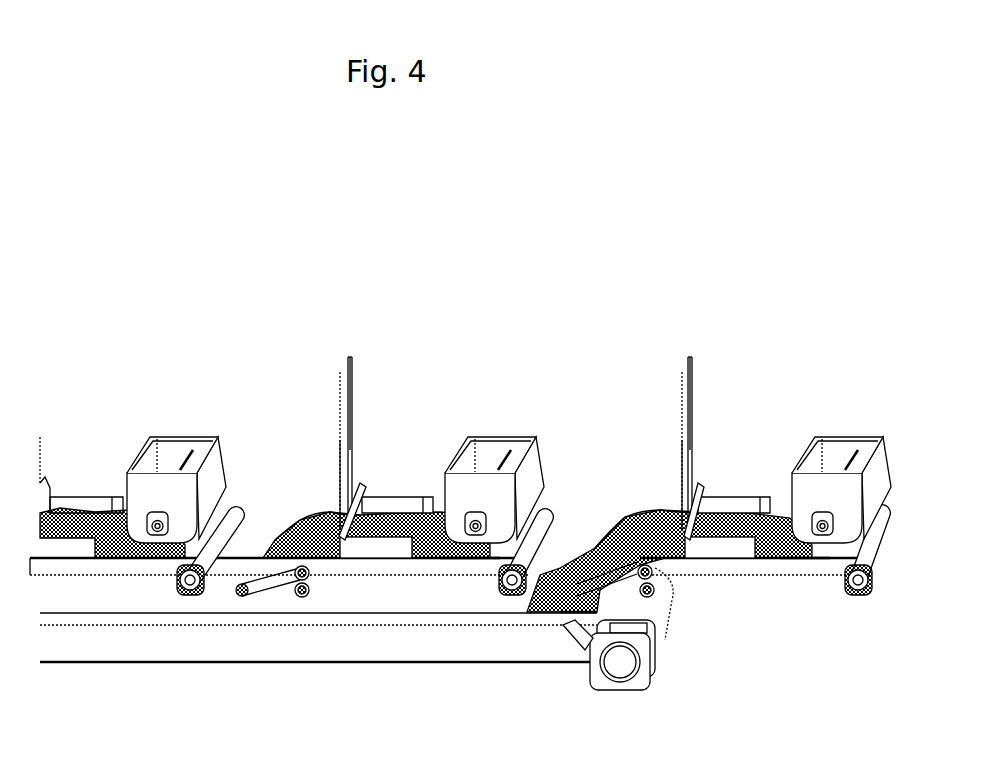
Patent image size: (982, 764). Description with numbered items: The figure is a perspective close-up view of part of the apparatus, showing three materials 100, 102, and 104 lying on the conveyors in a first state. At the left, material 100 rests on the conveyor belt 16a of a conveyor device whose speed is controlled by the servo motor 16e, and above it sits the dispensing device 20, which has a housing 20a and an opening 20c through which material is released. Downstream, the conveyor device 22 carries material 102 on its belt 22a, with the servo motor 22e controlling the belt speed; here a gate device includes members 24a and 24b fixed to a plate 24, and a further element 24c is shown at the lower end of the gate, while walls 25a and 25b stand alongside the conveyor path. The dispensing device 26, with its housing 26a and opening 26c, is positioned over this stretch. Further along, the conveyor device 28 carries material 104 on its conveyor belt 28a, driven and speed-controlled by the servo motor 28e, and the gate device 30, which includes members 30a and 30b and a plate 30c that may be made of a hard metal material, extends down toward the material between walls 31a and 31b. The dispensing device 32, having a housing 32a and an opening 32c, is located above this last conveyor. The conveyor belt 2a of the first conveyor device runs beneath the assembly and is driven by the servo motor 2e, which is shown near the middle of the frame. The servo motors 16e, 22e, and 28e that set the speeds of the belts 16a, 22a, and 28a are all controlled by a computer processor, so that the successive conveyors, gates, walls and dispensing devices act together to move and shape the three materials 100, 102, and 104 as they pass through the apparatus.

The conveyor belt 2a is at (275, 605).
The servo motor 2e is at (610, 672).
The conveyor belt 16a is at (210, 527).
The servo motor 16e is at (188, 585).
The dispensing device 20 is at (185, 450).
The housing 20a is at (215, 455).
The opening 20c is at (200, 443).
The conveyor device 22 is at (302, 520).
The belt 22a is at (322, 517).
The servo motor 22e is at (510, 590).
The plate 24 is at (337, 430).
The member 24a is at (340, 468).
The member 24b is at (355, 440).
The blade 24c is at (360, 507).
The wall 25a is at (373, 548).
The wall 25b is at (393, 500).
The dispensing device 26 is at (492, 448).
The housing 26a is at (533, 453).
The opening 26c is at (513, 442).
The conveyor device 28 is at (630, 522).
The conveyor belt 28a is at (657, 515).
The servo motor 28e is at (857, 585).
The gate device 30 is at (678, 428).
The member 30a is at (680, 470).
The member 30b is at (695, 448).
The plate 30c is at (698, 500).
The wall 31a is at (727, 550).
The wall 31b is at (733, 498).
The dispensing device 32 is at (827, 448).
The housing 32a is at (872, 455).
The opening 32c is at (848, 443).
The material 100 is at (127, 558).
The material 102 is at (468, 560).
The material 104 is at (548, 607).